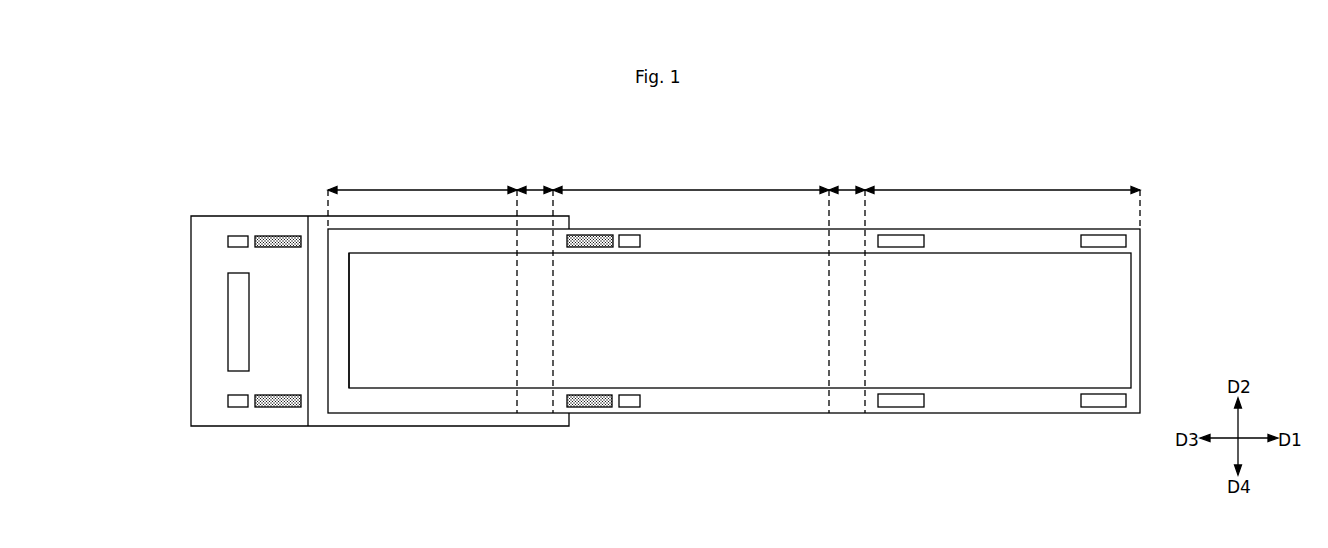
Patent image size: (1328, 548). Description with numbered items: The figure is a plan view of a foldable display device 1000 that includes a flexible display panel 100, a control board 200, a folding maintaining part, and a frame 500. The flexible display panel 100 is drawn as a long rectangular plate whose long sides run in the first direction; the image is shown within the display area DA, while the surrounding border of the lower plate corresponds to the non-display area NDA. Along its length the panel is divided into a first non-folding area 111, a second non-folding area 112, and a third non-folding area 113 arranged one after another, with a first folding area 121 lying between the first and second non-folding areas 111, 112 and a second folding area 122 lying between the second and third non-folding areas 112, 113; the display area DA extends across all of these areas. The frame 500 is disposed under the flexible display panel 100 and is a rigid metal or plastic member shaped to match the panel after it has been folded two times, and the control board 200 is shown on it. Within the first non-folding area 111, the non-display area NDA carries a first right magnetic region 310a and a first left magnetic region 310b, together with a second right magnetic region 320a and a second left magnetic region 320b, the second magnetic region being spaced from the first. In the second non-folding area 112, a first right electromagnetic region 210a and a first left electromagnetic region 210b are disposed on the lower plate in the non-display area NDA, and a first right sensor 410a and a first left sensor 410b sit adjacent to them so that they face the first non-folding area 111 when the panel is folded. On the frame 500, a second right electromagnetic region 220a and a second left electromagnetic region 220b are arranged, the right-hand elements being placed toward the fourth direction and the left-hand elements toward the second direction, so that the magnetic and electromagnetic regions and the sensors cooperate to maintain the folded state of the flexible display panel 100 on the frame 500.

The display device 1000 is at (1074, 117).
The flexible display panel 100 is at (1158, 236).
The control board 200 is at (238, 322).
The frame 500 is at (202, 384).
The first non-folding area 111 is at (1002, 181).
The second non-folding area 112 is at (691, 181).
The third non-folding area 113 is at (422, 181).
The first folding area 121 is at (847, 181).
The second folding area 122 is at (535, 181).
The first right electromagnetic region 210a is at (583, 401).
The first left electromagnetic region 210b is at (582, 242).
The second right electromagnetic region 220a is at (280, 405).
The second left electromagnetic region 220b is at (280, 242).
The first right magnetic region 310a is at (1102, 401).
The first left magnetic region 310b is at (1100, 238).
The second right magnetic region 320a is at (904, 401).
The second left magnetic region 320b is at (898, 238).
The first right sensor 410a is at (629, 401).
The first left sensor 410b is at (628, 240).
The display area DA is at (439, 373).
The non-display area NDA is at (375, 398).